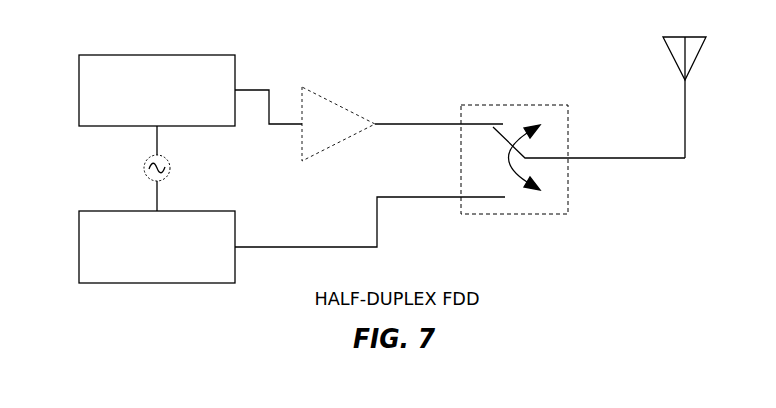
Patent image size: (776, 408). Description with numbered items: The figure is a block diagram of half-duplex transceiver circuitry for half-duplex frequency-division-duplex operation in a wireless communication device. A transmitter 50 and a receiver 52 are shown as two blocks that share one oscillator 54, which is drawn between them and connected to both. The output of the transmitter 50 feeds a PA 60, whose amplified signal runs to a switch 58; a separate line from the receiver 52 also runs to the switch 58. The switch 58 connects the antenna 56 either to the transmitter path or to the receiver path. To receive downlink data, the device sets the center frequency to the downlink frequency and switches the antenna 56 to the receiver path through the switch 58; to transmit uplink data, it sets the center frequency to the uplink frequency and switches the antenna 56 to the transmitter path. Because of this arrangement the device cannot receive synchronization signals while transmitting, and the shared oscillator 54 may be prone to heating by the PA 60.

The transmitter 50 is at (146, 113).
The receiver 52 is at (146, 270).
The oscillator 54 is at (169, 164).
The antenna 56 is at (687, 97).
The switch 58 is at (568, 188).
The PA 60 is at (327, 148).